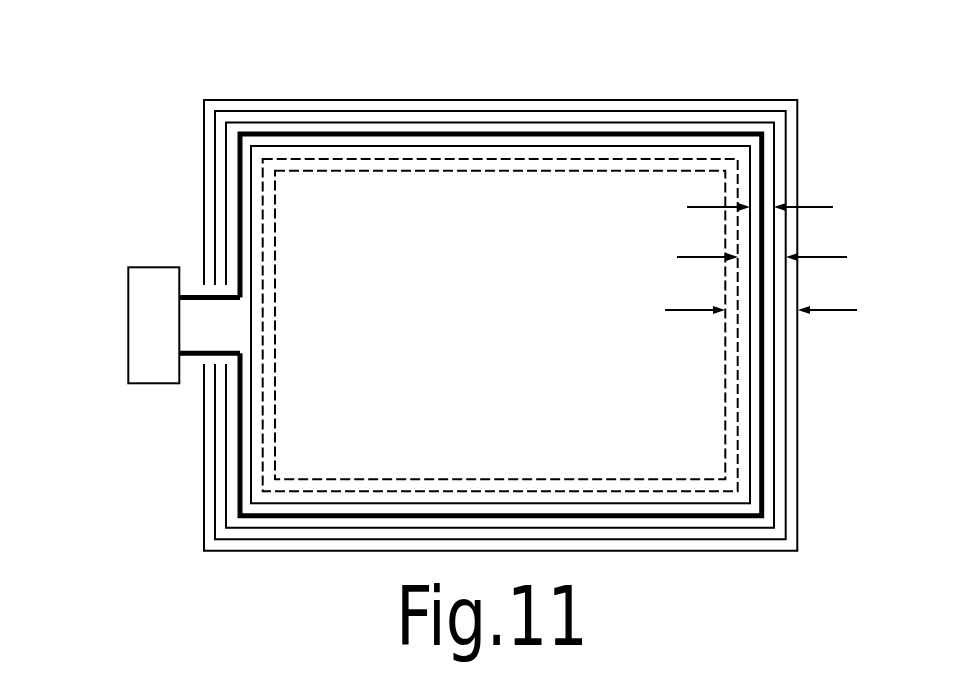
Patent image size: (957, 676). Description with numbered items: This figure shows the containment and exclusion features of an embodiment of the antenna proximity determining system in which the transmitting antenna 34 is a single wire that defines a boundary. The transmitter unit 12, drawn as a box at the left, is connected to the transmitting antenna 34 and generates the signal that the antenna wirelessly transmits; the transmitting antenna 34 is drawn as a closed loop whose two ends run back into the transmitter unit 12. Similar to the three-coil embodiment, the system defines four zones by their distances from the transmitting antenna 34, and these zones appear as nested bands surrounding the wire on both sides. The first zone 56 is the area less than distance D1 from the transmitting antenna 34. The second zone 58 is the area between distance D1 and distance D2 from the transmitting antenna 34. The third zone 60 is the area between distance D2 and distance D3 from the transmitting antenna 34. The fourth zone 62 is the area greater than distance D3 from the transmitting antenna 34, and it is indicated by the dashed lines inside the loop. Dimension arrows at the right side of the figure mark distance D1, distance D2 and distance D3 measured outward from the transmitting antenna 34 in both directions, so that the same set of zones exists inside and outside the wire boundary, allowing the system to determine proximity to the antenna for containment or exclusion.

The transmitter unit 12 is at (143, 284).
The transmitting antenna 34 is at (730, 130).
The first zone 56 is at (683, 142).
The second zone 58 is at (595, 153).
The third zone 60 is at (502, 162).
The fourth zone 62 is at (337, 184).
The distance D1 is at (746, 210).
The distance D2 is at (747, 260).
The distance D3 is at (746, 312).